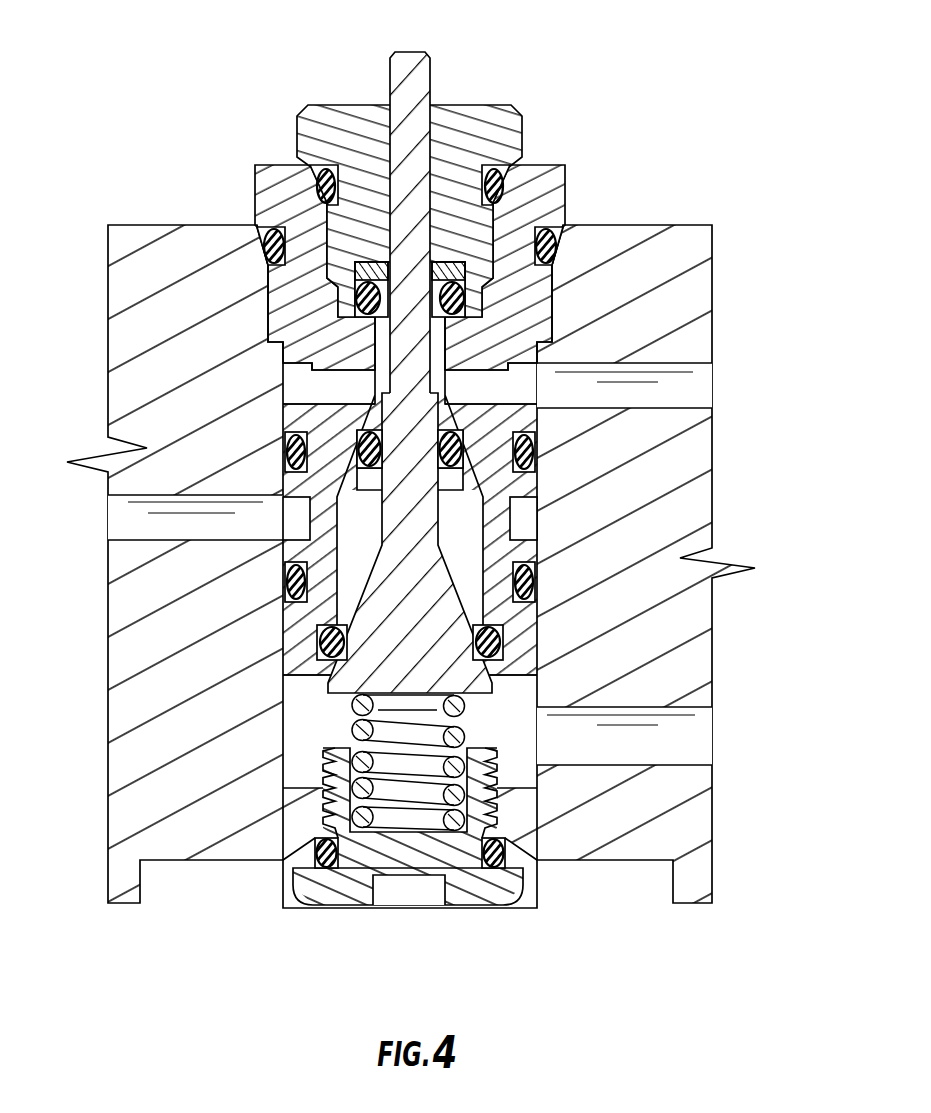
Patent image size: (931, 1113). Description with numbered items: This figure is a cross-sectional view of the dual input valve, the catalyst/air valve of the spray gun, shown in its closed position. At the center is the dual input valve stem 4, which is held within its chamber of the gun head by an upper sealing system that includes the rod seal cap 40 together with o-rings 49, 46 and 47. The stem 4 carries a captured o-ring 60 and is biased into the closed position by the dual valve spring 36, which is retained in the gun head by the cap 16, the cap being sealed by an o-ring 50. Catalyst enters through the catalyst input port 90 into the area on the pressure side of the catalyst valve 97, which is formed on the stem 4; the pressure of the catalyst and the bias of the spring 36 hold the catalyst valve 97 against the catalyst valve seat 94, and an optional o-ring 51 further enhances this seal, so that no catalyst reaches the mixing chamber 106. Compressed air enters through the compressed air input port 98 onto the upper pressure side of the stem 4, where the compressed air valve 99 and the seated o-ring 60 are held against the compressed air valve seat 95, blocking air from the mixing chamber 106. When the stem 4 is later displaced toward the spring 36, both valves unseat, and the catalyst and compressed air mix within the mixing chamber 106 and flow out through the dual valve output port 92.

The dual input valve stem 4 is at (425, 80).
The cap 16 is at (478, 888).
The dual valve spring 36 is at (478, 822).
The rod seal cap 40 is at (518, 128).
The o-ring 46 is at (266, 240).
The o-ring 47 is at (538, 450).
The o-ring 49 is at (322, 190).
The o-ring 50 is at (327, 868).
The optional o-ring 51 is at (505, 648).
The captured o-ring 60 is at (500, 423).
The catalyst input port 90 is at (704, 740).
The dual valve output port 92 is at (110, 517).
The catalyst valve seat 94 is at (283, 677).
The compressed air valve seat 95 is at (425, 408).
The catalyst valve 97 is at (432, 608).
The compressed air input port 98 is at (697, 390).
The compressed air valve 99 is at (512, 338).
The mixing chamber 106 is at (460, 523).